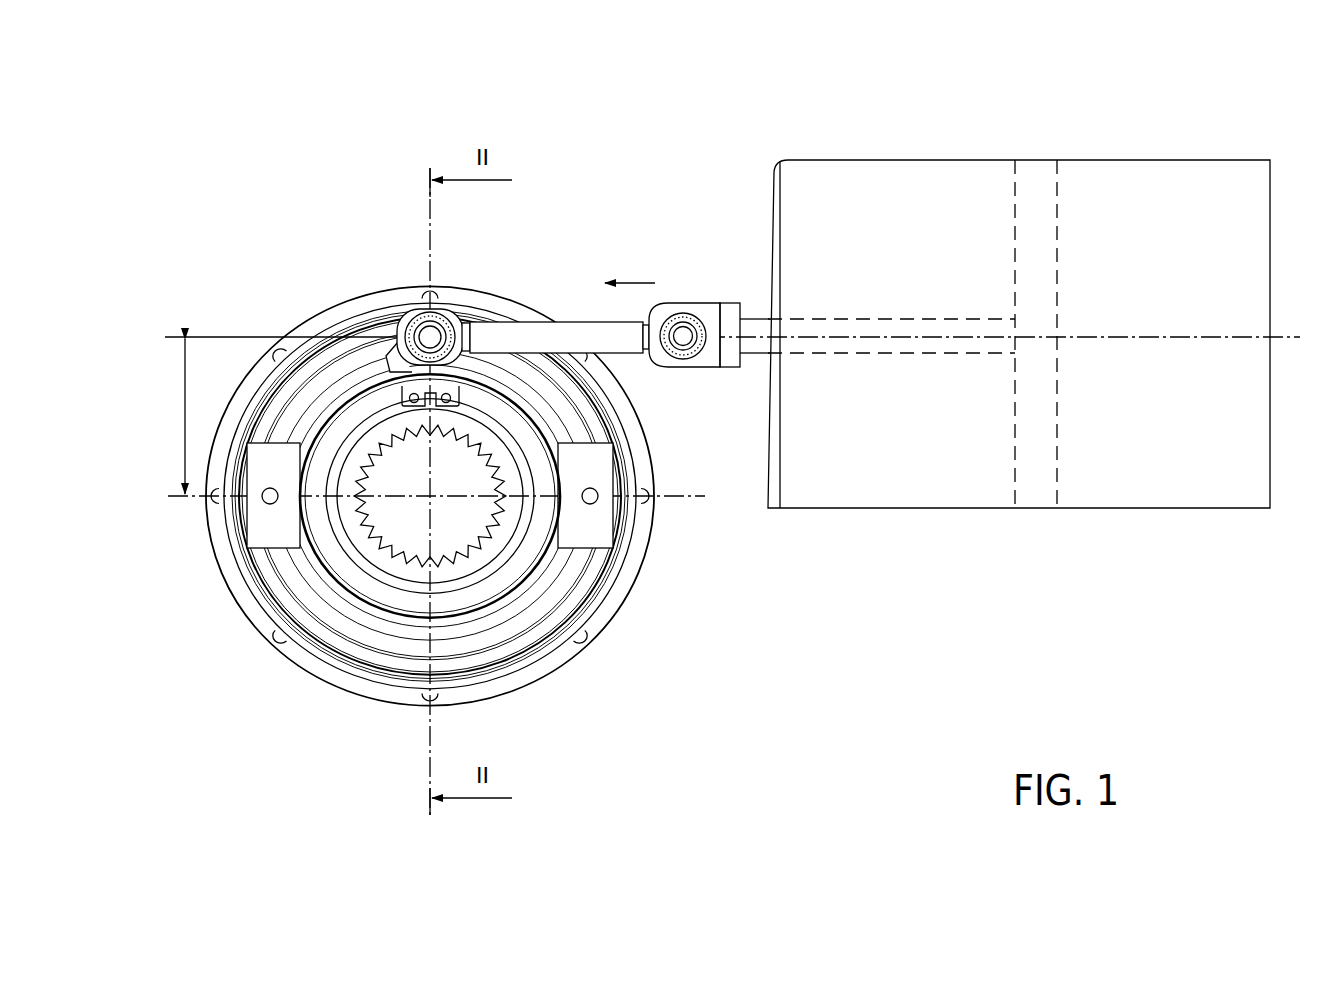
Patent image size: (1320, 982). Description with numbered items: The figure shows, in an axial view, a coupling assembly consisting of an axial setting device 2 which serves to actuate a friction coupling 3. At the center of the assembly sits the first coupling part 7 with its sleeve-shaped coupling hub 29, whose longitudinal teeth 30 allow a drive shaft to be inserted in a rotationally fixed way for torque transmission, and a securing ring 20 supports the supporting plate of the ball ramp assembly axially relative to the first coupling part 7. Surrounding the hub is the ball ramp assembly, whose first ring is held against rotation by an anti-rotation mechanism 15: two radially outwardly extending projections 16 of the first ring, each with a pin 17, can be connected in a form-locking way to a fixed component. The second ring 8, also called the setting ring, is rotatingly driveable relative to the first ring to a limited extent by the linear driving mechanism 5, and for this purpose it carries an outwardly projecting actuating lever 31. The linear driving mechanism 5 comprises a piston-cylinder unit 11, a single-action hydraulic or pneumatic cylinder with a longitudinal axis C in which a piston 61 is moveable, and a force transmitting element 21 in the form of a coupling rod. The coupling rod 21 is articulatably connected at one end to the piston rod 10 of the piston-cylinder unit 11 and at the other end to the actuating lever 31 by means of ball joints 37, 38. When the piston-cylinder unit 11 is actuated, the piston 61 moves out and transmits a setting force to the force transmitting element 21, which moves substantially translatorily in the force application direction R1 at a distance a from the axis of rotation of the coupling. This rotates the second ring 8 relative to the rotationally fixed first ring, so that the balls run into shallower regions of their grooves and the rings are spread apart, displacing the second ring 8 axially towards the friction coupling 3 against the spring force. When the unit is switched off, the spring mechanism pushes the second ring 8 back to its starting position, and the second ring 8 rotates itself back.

The axial setting device 2 is at (465, 405).
The friction coupling 3 is at (310, 313).
The linear driving mechanism 5 is at (993, 140).
The first coupling part 7 is at (430, 585).
The coupling hub 29 is at (413, 580).
The second ring 8 is at (485, 375).
The piston rod 10 is at (760, 330).
The piston-cylinder unit 11 is at (1105, 182).
The anti-rotation mechanism 15 is at (486, 511).
The projections 16 is at (608, 457).
The pin 17 is at (600, 493).
The securing ring 20 is at (503, 570).
The force transmitting element 21 is at (580, 312).
The longitudinal teeth 30 is at (467, 553).
The actuating lever 31 is at (393, 346).
The ball joint 37 is at (683, 303).
The ball joint 38 is at (445, 320).
The piston 61 is at (1057, 462).
The distance a is at (198, 416).
The longitudinal axis C is at (1243, 338).
The force application direction R1 is at (636, 270).